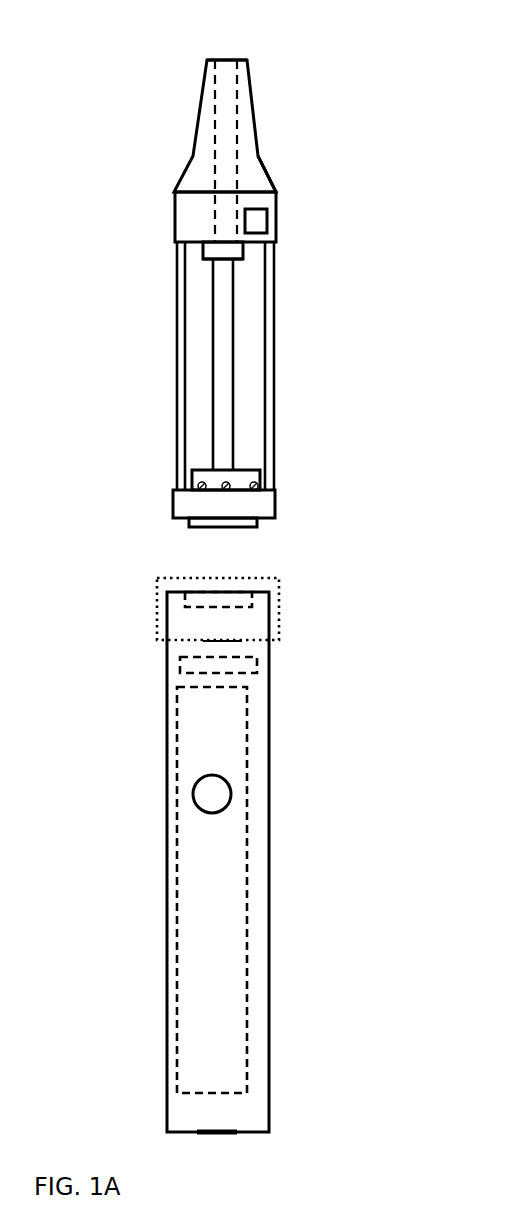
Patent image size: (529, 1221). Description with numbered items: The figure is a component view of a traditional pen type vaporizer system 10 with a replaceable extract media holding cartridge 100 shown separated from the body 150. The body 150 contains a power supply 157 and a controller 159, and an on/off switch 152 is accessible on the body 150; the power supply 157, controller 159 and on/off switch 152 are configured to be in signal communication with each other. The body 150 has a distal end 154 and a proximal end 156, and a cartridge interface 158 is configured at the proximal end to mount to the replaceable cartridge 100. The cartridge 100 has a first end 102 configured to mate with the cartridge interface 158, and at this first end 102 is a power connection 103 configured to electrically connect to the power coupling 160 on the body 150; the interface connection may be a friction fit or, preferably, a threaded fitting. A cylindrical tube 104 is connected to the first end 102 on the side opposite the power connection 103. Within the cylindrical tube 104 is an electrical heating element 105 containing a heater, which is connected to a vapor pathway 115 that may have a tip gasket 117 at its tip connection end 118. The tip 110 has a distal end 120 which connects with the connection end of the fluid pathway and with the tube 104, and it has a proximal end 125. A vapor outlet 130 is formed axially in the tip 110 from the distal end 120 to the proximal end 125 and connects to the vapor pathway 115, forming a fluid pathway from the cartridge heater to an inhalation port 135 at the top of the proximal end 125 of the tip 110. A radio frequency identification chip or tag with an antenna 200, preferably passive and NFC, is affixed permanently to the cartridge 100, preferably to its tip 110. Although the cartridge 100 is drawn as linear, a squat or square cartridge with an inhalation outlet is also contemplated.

The vaporizer system 10 is at (317, 455).
The replaceable cartridge 100 is at (146, 350).
The first end 102 is at (164, 514).
The power connection 103 is at (208, 527).
The cylindrical tube 104 is at (178, 433).
The electrical heating element 105 is at (193, 482).
The tip 110 is at (184, 107).
The vapor pathway 115 is at (213, 407).
The tip gasket 117 is at (218, 250).
The tip connection end 118 is at (218, 266).
The distal end 120 is at (174, 219).
The proximal end 125 is at (245, 70).
The vapor outlet 130 is at (228, 175).
The inhalation port 135 is at (229, 49).
The radio frequency identification chip 200 is at (258, 222).
The body 150 is at (164, 905).
The on/off switch 152 is at (215, 800).
The distal end 154 is at (219, 1118).
The proximal end 156 is at (223, 630).
The power supply 157 is at (228, 882).
The cartridge interface 158 is at (156, 601).
The controller 159 is at (257, 664).
The power coupling 160 is at (213, 601).